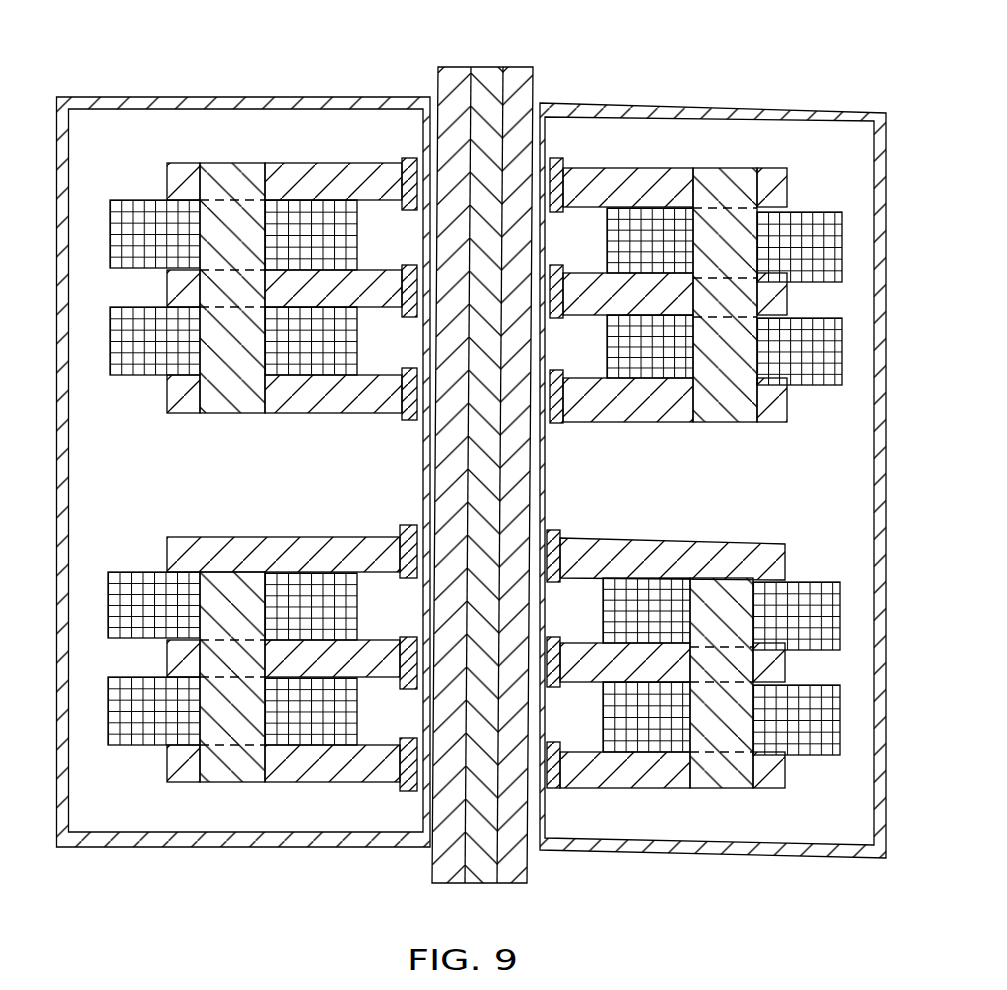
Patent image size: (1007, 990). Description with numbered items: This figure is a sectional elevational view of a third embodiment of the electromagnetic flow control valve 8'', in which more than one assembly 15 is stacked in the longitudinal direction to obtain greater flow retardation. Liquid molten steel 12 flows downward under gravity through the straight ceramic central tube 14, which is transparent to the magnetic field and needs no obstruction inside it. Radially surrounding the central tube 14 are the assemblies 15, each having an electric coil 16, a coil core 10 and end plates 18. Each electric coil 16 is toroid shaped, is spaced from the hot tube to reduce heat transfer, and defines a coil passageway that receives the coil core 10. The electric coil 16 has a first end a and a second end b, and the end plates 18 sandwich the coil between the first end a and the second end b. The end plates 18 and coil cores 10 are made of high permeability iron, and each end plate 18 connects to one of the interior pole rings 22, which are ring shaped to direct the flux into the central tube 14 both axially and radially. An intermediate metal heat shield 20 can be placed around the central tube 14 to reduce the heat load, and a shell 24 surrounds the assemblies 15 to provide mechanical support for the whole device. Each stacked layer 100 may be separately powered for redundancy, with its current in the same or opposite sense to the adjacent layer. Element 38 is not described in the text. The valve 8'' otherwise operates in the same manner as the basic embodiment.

The electromagnetic flow control valve 8'' is at (472, 457).
The coil core 10 is at (231, 183).
The liquid molten steel 12 is at (502, 444).
The central tube 14 is at (535, 444).
The assembly 15 is at (133, 199).
The electric coil 16 is at (110, 211).
The end plate 18 is at (470, 480).
The intermediate metal heat shield 20 is at (543, 820).
The interior pole ring 22 is at (408, 157).
The shell 24 is at (126, 97).
The yoke plate 38 is at (320, 162).
The layer 100 is at (810, 471).
The first end a is at (808, 212).
The second end b is at (807, 281).